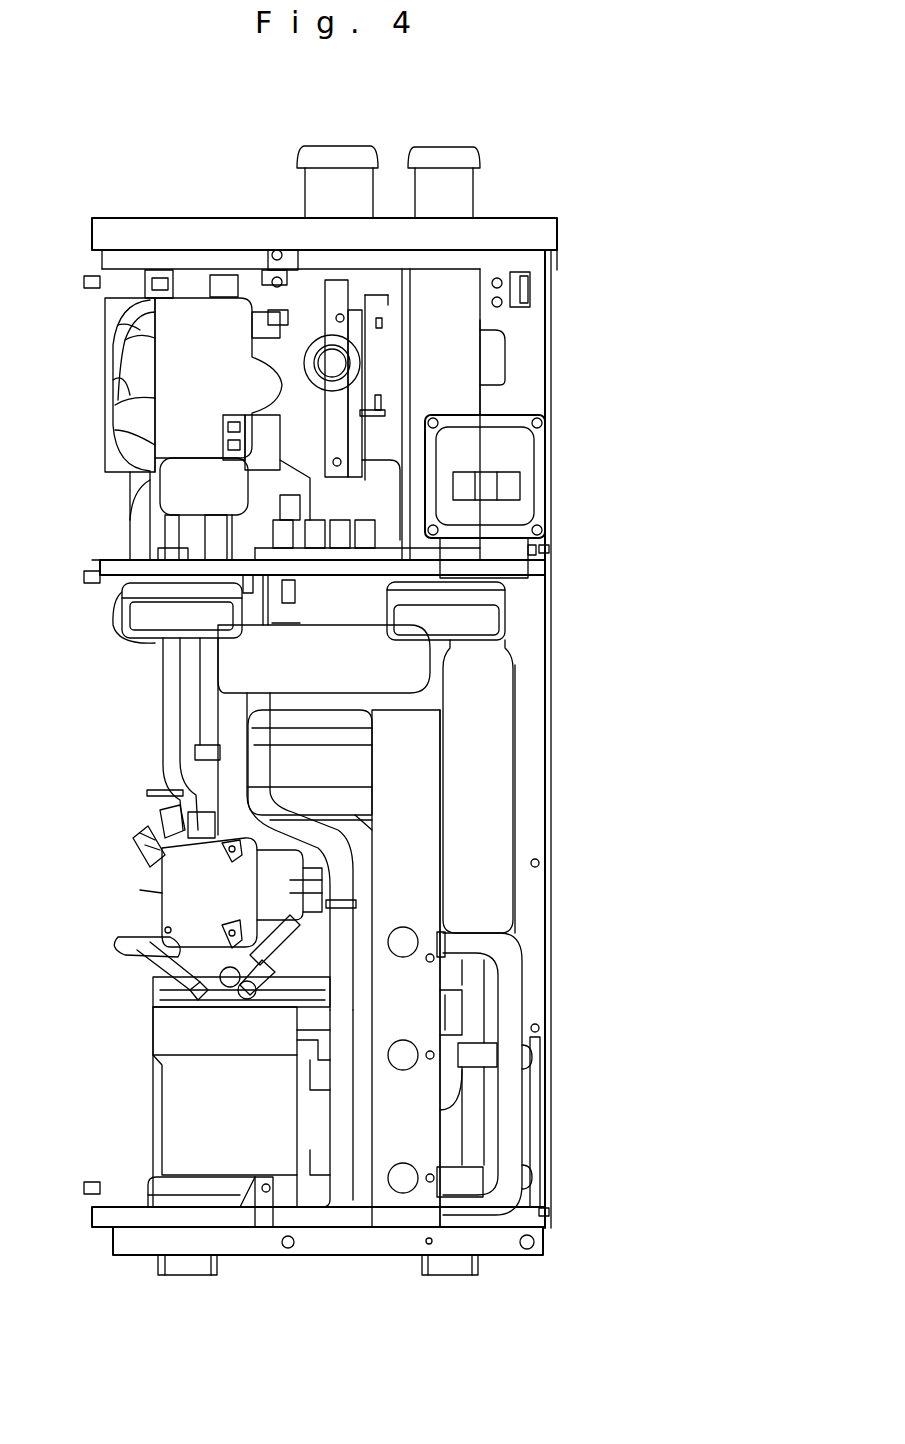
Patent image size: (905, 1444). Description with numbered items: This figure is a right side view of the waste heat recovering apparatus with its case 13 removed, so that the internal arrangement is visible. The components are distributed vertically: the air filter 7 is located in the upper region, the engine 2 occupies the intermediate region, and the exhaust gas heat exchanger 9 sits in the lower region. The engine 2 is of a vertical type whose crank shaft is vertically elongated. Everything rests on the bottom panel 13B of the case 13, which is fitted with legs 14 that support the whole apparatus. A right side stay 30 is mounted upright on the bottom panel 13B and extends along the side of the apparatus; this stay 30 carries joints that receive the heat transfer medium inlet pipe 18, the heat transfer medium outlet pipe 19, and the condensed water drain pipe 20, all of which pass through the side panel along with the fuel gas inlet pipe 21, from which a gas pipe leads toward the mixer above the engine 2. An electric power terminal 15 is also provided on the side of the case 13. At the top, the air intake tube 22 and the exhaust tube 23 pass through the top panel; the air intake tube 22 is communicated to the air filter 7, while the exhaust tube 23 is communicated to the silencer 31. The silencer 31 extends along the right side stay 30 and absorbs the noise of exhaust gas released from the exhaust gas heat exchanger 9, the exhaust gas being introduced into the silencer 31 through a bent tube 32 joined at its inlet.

The engine 2 is at (173, 897).
The air filter 7 is at (128, 398).
The exhaust gas heat exchanger 9 is at (175, 1107).
The case 13 is at (556, 623).
The bottom panel 13B is at (510, 1256).
The legs 14 is at (187, 1268).
The electric power terminal 15 is at (520, 478).
The heat transfer medium inlet pipe 18 is at (402, 1162).
The heat transfer medium outlet pipe 19 is at (403, 1039).
The condensed water drain pipe 20 is at (403, 926).
The fuel gas inlet pipe 21 is at (335, 363).
The air intake tube 22 is at (322, 163).
The exhaust tube 23 is at (462, 163).
The right side stay 30 is at (423, 838).
The silencer 31 is at (500, 736).
The bent tube 32 is at (272, 723).